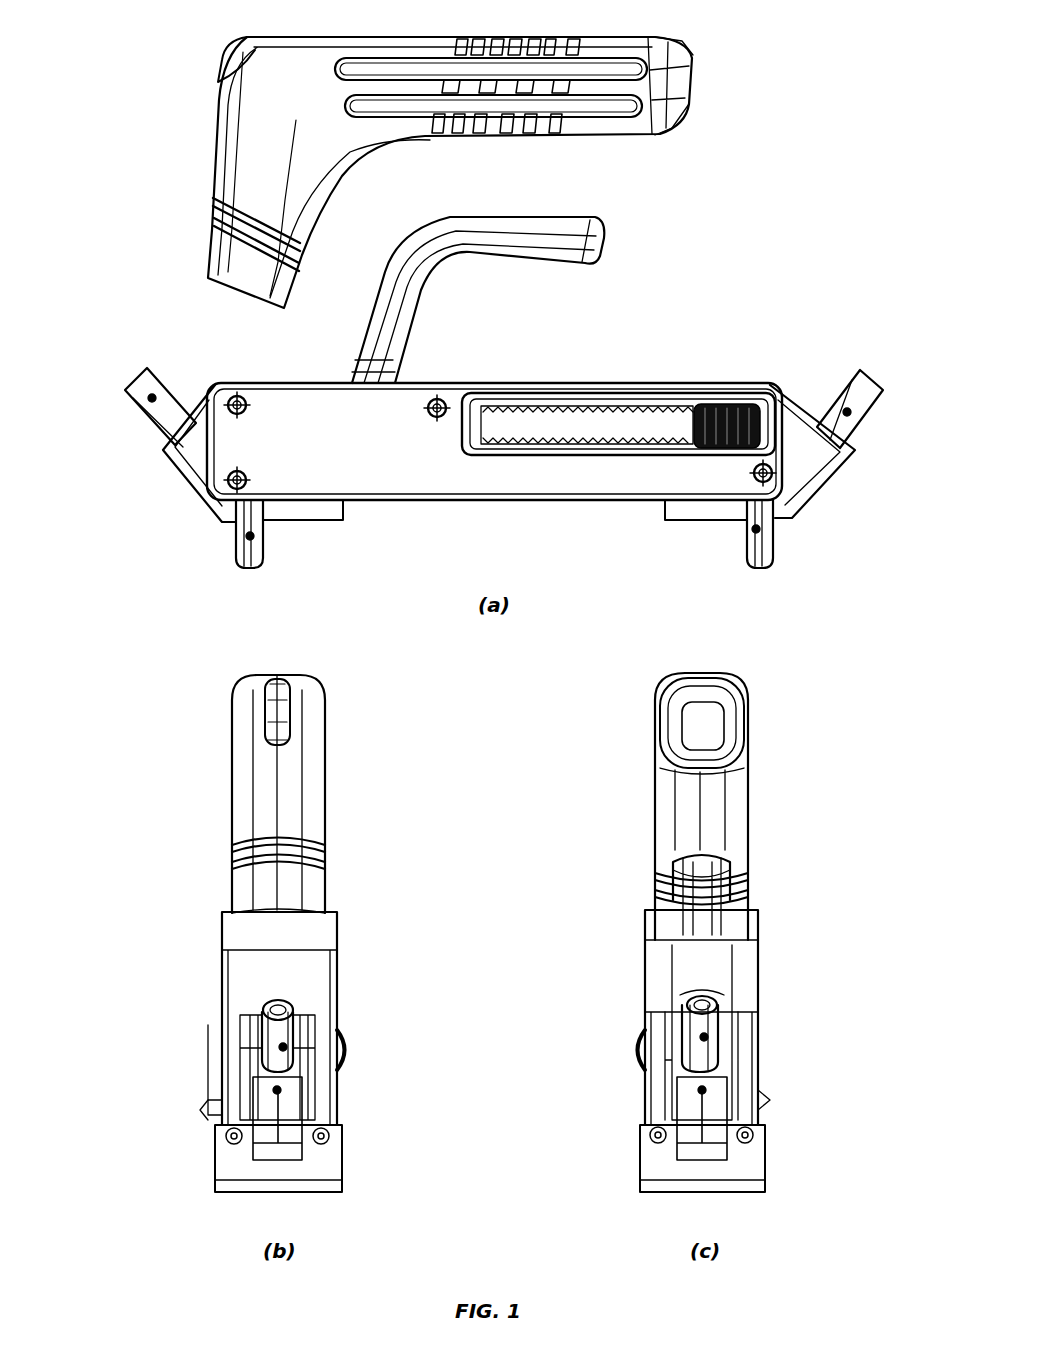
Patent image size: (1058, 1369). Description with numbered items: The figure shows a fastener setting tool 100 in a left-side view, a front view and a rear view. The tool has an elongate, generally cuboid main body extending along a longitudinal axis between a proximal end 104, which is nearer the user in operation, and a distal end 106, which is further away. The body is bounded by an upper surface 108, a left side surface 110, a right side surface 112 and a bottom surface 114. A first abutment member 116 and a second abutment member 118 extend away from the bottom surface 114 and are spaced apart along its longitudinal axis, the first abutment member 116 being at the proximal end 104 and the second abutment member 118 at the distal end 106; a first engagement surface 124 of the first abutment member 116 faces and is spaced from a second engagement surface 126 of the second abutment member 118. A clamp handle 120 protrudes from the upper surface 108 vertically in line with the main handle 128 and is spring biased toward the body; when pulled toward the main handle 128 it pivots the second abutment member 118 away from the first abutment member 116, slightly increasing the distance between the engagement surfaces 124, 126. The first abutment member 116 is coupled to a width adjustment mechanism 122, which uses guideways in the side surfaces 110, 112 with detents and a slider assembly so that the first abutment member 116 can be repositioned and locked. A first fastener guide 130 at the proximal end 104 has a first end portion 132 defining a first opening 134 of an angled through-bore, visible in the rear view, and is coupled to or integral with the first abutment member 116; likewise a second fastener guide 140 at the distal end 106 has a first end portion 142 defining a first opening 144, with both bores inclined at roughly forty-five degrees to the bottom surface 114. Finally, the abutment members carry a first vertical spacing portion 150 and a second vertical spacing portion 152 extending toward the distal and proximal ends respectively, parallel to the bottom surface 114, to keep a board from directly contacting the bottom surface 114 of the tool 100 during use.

The fastener setting tool 100 is at (733, 154).
The proximal end 104 is at (795, 550).
The distal end 106 is at (173, 520).
The upper surface 108 is at (484, 376).
The left side surface 110 is at (645, 1086).
The right side surface 112 is at (222, 1059).
The bottom surface 114 is at (547, 505).
The first abutment member 116 is at (758, 568).
The second abutment member 118 is at (246, 568).
The clamp handle 120 is at (592, 200).
The width adjustment mechanism 122 is at (621, 424).
The first engagement surface 124 is at (745, 548).
The second engagement surface 126 is at (263, 542).
The main handle 128 is at (585, 52).
The first fastener guide 130 is at (847, 412).
The first end portion 132 is at (704, 1037).
The first opening 134 is at (715, 998).
The second fastener guide 140 is at (152, 398).
The first end portion 142 is at (283, 1047).
The first opening 144 is at (278, 1005).
The first vertical spacing portion 150 is at (707, 513).
The second vertical spacing portion 152 is at (300, 512).